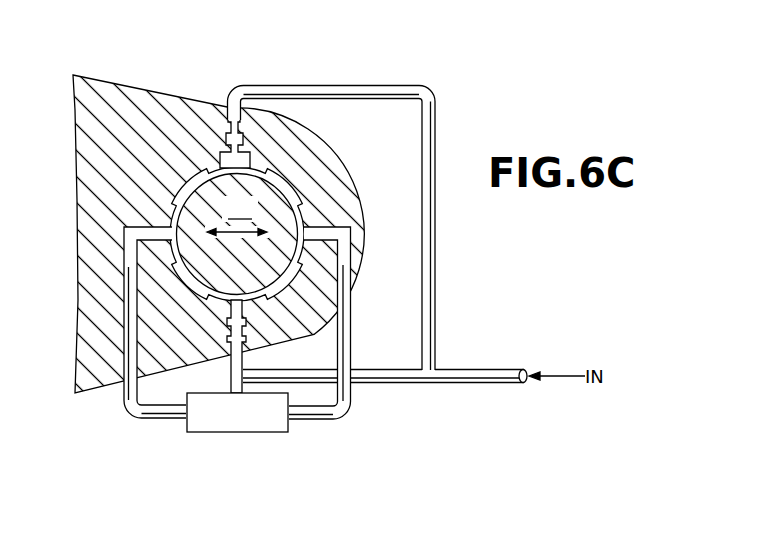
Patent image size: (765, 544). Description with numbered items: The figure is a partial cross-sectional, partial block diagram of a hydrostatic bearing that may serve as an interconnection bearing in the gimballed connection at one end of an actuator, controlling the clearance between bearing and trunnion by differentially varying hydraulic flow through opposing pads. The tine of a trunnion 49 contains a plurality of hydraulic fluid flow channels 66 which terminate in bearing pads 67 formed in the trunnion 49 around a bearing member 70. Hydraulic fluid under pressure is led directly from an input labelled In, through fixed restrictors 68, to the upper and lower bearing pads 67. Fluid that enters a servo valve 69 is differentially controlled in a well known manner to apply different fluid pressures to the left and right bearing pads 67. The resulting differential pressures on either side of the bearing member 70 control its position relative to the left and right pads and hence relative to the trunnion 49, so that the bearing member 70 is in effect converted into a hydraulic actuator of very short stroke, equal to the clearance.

The trunnion 49 is at (104, 92).
The hydraulic fluid flow channels 66 is at (370, 88).
The bearing pads 67 is at (267, 160).
The fixed restrictors 68 is at (227, 147).
The servo valve 69 is at (290, 462).
The bearing member 70 is at (237, 234).